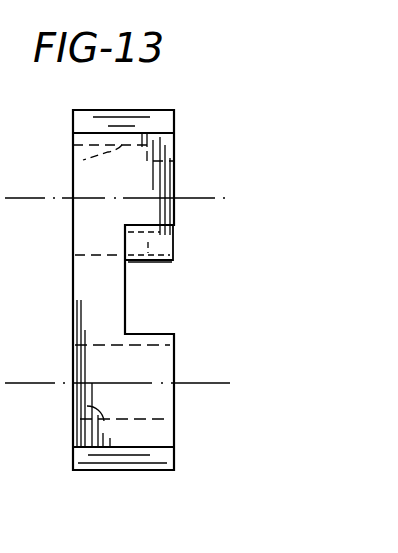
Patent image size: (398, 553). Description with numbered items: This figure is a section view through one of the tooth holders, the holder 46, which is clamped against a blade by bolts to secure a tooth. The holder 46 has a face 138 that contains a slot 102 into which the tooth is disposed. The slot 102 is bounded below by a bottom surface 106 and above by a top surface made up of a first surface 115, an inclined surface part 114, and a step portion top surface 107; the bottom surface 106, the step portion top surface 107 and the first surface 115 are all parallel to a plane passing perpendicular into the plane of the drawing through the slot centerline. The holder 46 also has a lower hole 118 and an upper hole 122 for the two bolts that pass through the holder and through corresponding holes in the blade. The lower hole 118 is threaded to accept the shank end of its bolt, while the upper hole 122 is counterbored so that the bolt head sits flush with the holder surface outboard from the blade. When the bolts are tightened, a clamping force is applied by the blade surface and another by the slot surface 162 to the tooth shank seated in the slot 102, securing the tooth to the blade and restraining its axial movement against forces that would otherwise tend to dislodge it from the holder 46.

The holder 46 is at (178, 135).
The face 138 is at (175, 175).
The upper hole 122 is at (83, 160).
The step portion top surface 107 is at (172, 231).
The inclined surface part 114 is at (148, 242).
The first surface 115 is at (157, 263).
The slot surface 162 is at (127, 282).
The slot 102 is at (142, 307).
The bottom surface 106 is at (157, 334).
The lower hole 118 is at (87, 406).